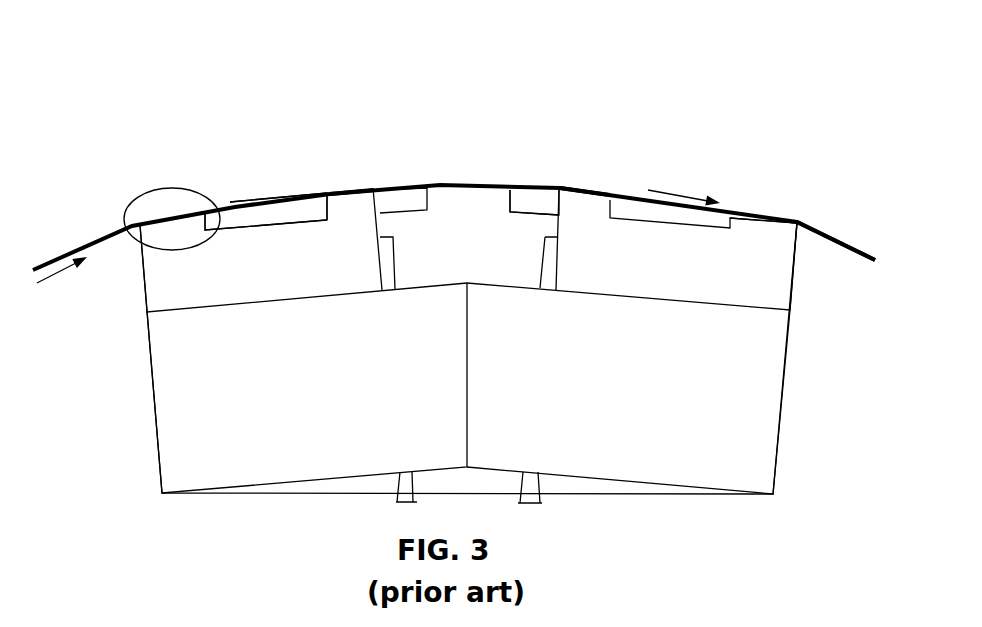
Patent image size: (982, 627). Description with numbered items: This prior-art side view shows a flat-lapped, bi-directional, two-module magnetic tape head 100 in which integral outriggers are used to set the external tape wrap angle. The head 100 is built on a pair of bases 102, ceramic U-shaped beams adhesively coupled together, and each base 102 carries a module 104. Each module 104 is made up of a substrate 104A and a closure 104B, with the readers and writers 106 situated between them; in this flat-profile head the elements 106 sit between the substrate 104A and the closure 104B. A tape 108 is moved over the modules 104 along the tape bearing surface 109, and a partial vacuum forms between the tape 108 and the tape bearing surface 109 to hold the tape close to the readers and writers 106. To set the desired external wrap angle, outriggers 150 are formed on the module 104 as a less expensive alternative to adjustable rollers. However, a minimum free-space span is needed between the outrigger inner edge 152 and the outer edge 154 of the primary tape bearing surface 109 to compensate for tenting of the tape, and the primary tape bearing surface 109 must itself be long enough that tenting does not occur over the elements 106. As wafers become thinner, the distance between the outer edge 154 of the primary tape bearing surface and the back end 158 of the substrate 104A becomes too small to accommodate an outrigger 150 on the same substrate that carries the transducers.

The magnetic tape head 100 is at (242, 149).
The base 102 is at (148, 382).
The module 104 is at (145, 306).
The substrate 104A is at (737, 257).
The closure 104B is at (508, 203).
The readers and writers 106 is at (373, 178).
The tape 108 is at (840, 248).
The tape bearing surface 109 is at (353, 178).
The outrigger 150 is at (186, 189).
The outrigger inner edge 152 is at (233, 225).
The outer edge of the primary tape bearing surface 154 is at (320, 200).
The back end of the substrate 158 is at (142, 280).